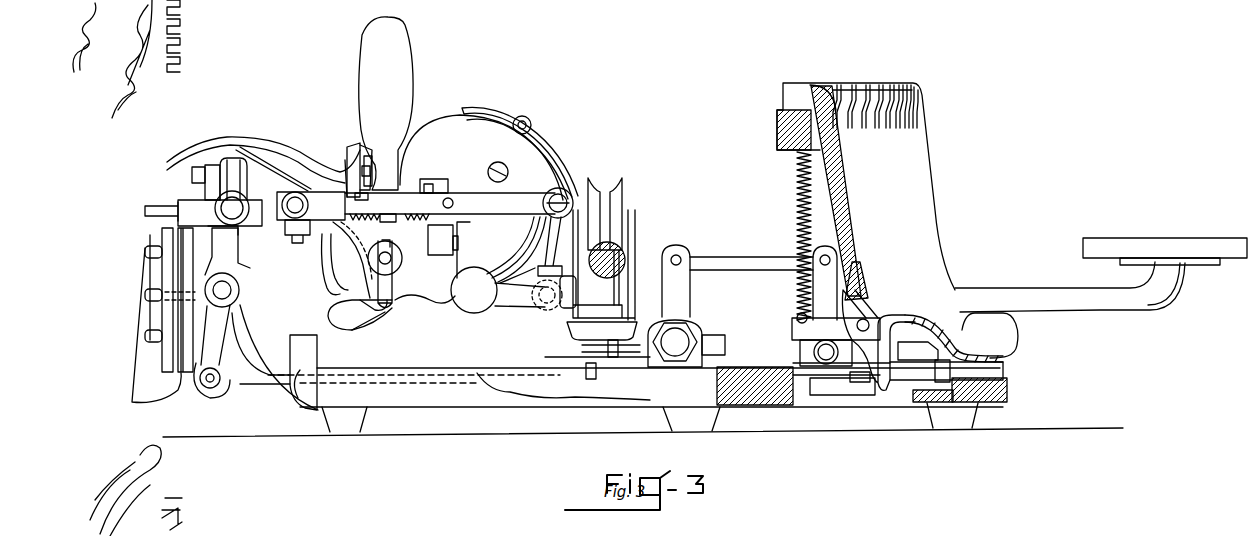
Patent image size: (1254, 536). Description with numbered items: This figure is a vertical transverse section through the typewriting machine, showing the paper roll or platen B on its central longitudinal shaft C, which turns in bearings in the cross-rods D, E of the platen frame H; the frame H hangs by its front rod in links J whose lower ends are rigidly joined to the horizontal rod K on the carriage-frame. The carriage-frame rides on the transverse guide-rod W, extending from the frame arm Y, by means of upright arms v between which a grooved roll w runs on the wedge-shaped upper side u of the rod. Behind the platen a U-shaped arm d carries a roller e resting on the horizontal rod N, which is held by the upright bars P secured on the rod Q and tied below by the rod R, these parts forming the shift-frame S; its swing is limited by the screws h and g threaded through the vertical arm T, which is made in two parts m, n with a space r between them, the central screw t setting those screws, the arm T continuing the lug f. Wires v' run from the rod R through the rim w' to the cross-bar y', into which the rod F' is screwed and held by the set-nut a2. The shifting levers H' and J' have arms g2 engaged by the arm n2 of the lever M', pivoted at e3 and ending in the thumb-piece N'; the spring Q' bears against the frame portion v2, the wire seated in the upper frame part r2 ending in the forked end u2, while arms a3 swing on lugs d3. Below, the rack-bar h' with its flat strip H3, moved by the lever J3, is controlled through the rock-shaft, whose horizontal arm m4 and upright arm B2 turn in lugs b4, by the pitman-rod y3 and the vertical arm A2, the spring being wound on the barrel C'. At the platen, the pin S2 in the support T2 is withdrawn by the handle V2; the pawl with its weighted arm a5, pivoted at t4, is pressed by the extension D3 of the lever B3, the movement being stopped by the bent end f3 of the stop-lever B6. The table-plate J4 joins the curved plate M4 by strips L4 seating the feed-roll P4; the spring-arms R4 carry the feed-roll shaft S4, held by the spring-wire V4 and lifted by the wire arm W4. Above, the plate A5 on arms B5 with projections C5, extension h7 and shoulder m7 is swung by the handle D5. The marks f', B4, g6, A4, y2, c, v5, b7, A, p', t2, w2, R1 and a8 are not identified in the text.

The rear part of vertical arm n is at (168, 271).
The screw h is at (142, 256).
The central screw t is at (165, 296).
The screw g is at (160, 343).
The vertical arm T is at (172, 317).
The front part of vertical arm m is at (183, 356).
The space r is at (160, 313).
The shift-frame S is at (240, 266).
The central longitudinal shaft C is at (258, 247).
The parallel rod Q is at (248, 290).
The upright bar P is at (222, 342).
The rod R is at (208, 389).
The rearwardly-extending lug f is at (275, 355).
The arm extension f' is at (299, 358).
The wire v' is at (265, 396).
The rim of frame w' is at (297, 379).
The shaft B4 is at (150, 209).
The collar g6 is at (161, 223).
The horizontal rod N is at (220, 214).
The roller or wheel e is at (240, 160).
The U-shaped arm d is at (205, 185).
The screw A4 is at (198, 178).
The handle D5 is at (190, 150).
The table-plate J4 is at (262, 170).
The cross-rod D is at (311, 217).
The projection C5 is at (350, 162).
The arm B5 is at (315, 180).
The plate A5 is at (360, 150).
The extension of bearing-arm D3 is at (364, 160).
The lug y2 is at (368, 188).
The pivot of pawl t4 is at (372, 170).
The lever B3 is at (386, 103).
The paper roll or platen B is at (427, 136).
The flat spring-arm R4 is at (497, 121).
The shaft S4 is at (532, 128).
The wire arm W4 is at (548, 147).
The curved plate M4 is at (548, 170).
The spring-wire V4 is at (459, 203).
The hole c is at (451, 199).
The bent end of upright f3 is at (430, 180).
The platen frame H is at (480, 238).
The link J is at (512, 243).
The pin S2 is at (391, 265).
The support T2 is at (451, 268).
The lever J3 is at (494, 312).
The cross-rod E is at (544, 293).
The upright arm v is at (596, 242).
The horizontal rod K is at (560, 312).
The pin v5 is at (570, 318).
The flat horizontal bar h' is at (554, 348).
The flat strip H3 is at (603, 348).
The handle of lever V2 is at (360, 288).
The feed-roll P4 is at (372, 327).
The strip or clasp L4 is at (384, 317).
The hook b7 is at (366, 300).
The extension of arm h7 is at (308, 264).
The shoulder m7 is at (330, 290).
The grooved roll w is at (620, 241).
The upper side of guide-rod u is at (623, 258).
The horizontal transverse guide-rod W is at (640, 278).
The arm of pawl a5 is at (617, 298).
The arm of frame Y is at (621, 333).
The upright arm of rock-shaft B2 is at (683, 265).
The lug b4 is at (690, 328).
The block m4 is at (716, 345).
The base block A is at (746, 368).
The pitman-rod y3 is at (751, 247).
The vertical arm A2 is at (812, 284).
The spring p' is at (786, 236).
The spiral spring Q' is at (781, 207).
The loop t2 is at (800, 316).
The forked end u2 is at (811, 319).
The lug of frame d3 is at (806, 352).
The rod F' is at (756, 395).
The barrel C' is at (946, 394).
The arm of lever g2 is at (866, 382).
The lever H' is at (854, 407).
The block w2 is at (935, 382).
The cross-bar y' is at (588, 404).
The set-nut a2 is at (615, 417).
The lever J' is at (878, 340).
The pivot e3 is at (858, 300).
The arm a3 is at (888, 350).
The downwardly-projecting arm n2 is at (930, 332).
The lobe R1 is at (960, 350).
The lever B6 is at (858, 86).
The type bar a8 is at (877, 93).
The frame portion v2 is at (778, 140).
The upper part of frame r2 is at (797, 152).
The lever M' is at (1070, 287).
The thumb-piece N' is at (1165, 241).